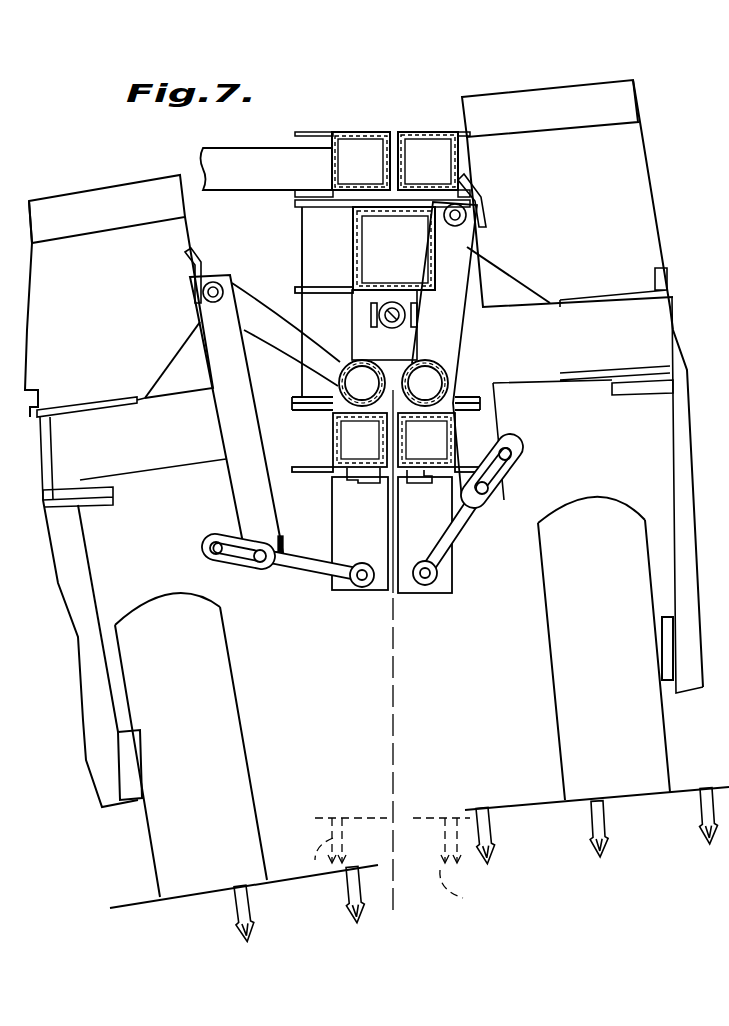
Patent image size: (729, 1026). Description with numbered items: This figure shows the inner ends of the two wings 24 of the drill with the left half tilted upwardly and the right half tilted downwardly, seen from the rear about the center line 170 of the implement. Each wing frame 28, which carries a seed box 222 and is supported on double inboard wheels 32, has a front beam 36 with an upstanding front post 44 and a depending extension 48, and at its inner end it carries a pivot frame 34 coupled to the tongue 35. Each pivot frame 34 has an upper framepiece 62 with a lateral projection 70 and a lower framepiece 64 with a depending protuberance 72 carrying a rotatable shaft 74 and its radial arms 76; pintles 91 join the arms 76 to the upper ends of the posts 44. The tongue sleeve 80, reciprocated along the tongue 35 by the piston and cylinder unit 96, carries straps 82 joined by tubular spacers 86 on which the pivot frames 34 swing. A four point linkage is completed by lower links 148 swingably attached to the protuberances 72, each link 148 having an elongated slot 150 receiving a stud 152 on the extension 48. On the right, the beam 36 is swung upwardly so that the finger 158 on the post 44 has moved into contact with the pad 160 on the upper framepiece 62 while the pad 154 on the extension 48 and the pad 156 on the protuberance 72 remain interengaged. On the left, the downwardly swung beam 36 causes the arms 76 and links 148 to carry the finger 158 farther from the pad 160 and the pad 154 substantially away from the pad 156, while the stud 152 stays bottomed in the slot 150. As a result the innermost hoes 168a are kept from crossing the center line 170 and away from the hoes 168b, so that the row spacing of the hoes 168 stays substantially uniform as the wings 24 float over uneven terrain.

The wing 24 is at (86, 170).
The seed box 222 is at (47, 207).
The wing frame 28 is at (85, 400).
The inner double wheels 32 is at (253, 787).
The pivot frame 34 is at (341, 124).
The tongue 35 is at (426, 232).
The front beam 36 is at (62, 452).
The front post 44 is at (200, 322).
The extension 48 is at (232, 478).
The upper framepiece 62 is at (370, 133).
The lower framepiece 64 is at (333, 431).
The lateral projection 70 is at (227, 148).
The protuberance 72 is at (338, 596).
The rotatable shaft 74 is at (338, 368).
The arm 76 is at (276, 342).
The tongue sleeve 80 is at (362, 240).
The strap 82 is at (330, 285).
The tubular spacer 86 is at (302, 258).
The pintle 91 is at (213, 282).
The piston and cylinder unit 96 is at (384, 339).
The lower link 148 is at (318, 578).
The slot 150 is at (208, 540).
The stud 152 is at (250, 568).
The pad 154 is at (279, 549).
The pad 156 is at (327, 493).
The finger 158 is at (190, 258).
The pad 160 is at (324, 162).
The hoe 168 is at (233, 908).
The innermost hoe 168a is at (347, 867).
The innermost hoe 168b is at (493, 853).
The center line 170 is at (394, 670).